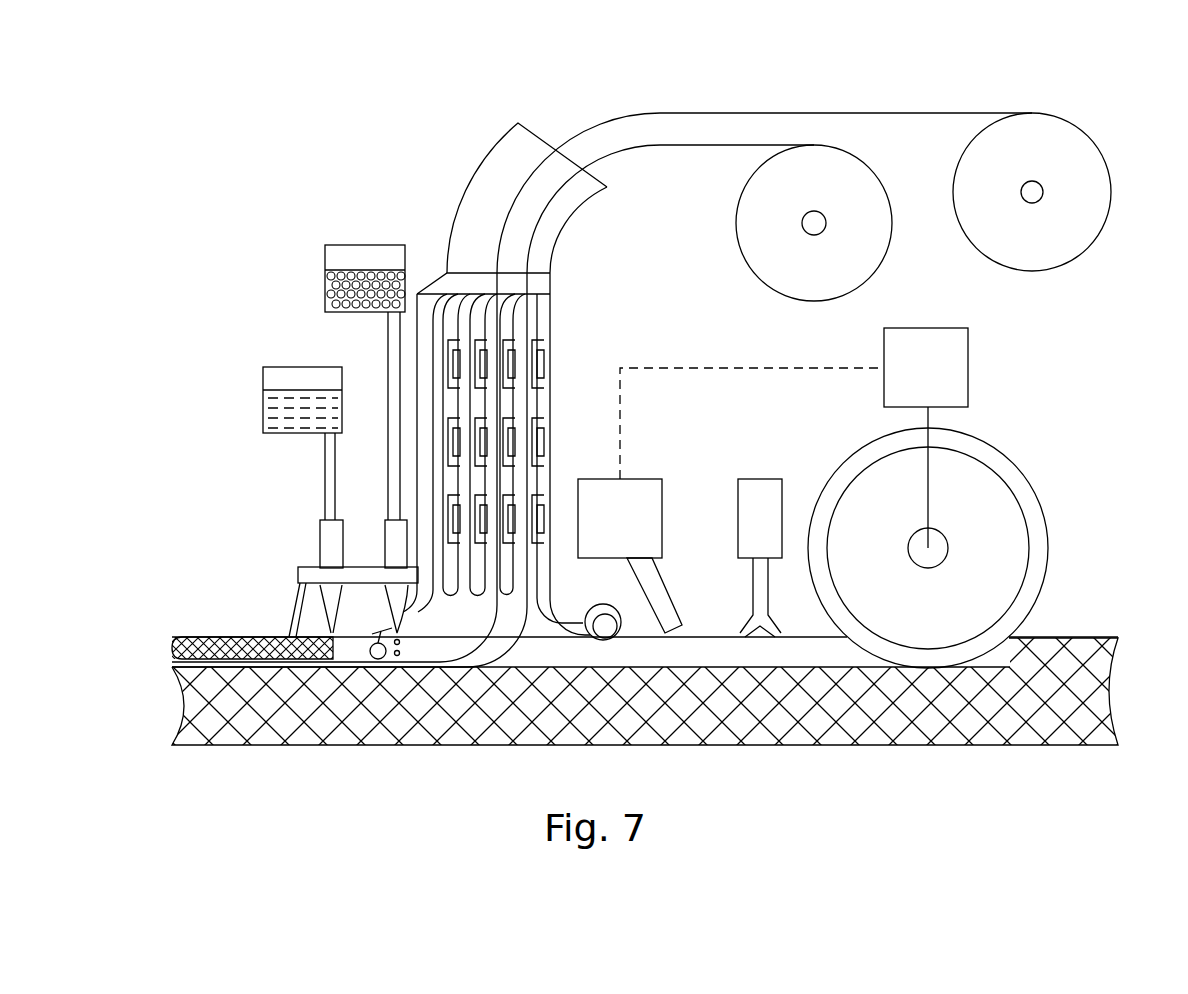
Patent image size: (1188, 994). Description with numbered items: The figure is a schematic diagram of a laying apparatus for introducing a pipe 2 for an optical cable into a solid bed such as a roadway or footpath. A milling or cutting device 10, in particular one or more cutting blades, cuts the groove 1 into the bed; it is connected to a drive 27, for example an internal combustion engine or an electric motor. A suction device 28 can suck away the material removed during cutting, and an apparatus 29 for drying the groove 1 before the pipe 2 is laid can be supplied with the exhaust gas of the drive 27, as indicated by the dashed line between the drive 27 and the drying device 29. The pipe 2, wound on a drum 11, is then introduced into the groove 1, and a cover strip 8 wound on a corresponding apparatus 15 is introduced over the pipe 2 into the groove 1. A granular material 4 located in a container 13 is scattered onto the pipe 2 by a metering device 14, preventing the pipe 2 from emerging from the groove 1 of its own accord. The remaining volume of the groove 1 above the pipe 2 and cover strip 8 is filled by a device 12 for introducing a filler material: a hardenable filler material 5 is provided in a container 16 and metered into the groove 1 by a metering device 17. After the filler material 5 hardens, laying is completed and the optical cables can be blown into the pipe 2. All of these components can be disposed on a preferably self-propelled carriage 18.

The groove 1 is at (721, 658).
The pipe 2 is at (648, 150).
The granular material 4 is at (325, 290).
The hardenable filler material 5 is at (288, 413).
The cover strip 8 is at (614, 125).
The milling or cutting device 10 is at (1049, 476).
The drum 11 is at (842, 235).
The device for introducing a filler material 12 is at (249, 452).
The container 13 is at (350, 254).
The metering device 14 is at (390, 540).
The apparatus 15 is at (1082, 178).
The container 16 is at (287, 375).
The metering device 17 is at (333, 535).
The carriage 18 is at (591, 359).
The drive 27 is at (930, 375).
The suction device 28 is at (762, 507).
The apparatus for drying 29 is at (637, 503).